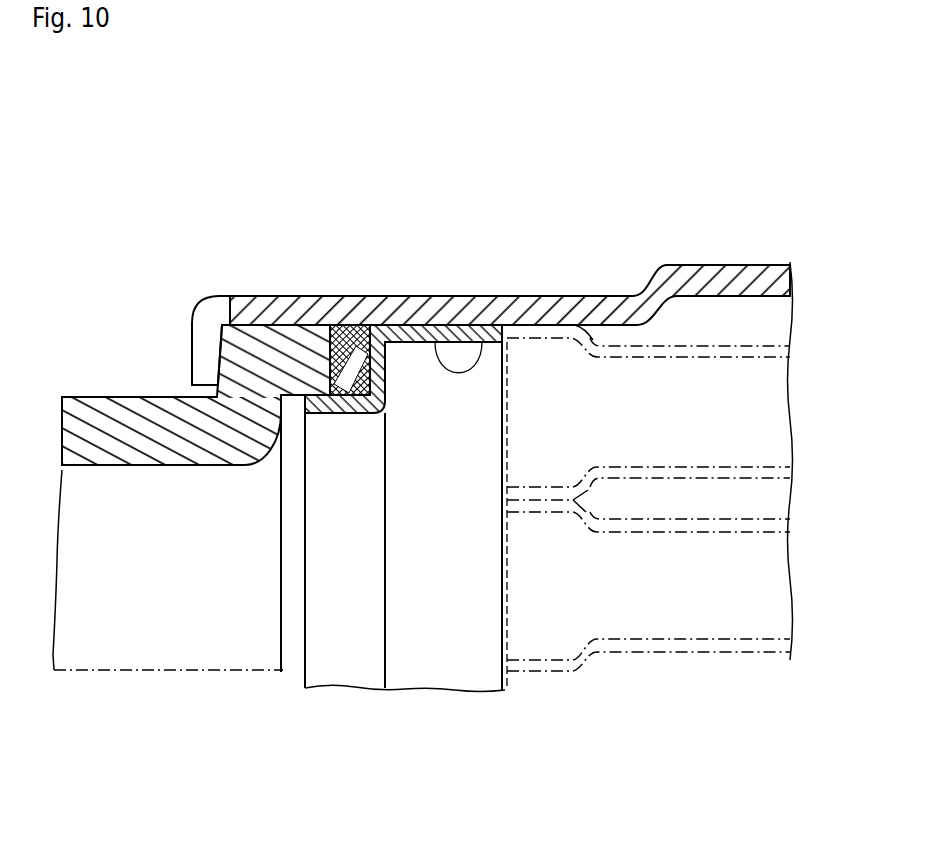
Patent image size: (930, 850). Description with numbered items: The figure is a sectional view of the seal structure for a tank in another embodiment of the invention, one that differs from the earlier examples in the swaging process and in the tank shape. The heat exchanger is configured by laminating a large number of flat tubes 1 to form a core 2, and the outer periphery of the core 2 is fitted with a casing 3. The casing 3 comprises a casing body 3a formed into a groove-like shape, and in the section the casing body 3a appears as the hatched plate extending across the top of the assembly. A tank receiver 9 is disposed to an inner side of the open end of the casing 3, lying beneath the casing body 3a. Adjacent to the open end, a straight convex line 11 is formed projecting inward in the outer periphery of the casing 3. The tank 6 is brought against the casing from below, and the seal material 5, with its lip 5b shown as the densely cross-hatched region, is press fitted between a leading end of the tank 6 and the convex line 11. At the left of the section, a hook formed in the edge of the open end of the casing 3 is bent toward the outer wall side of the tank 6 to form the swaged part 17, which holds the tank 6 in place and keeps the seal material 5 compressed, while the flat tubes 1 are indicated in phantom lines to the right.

The flat tube 1 is at (562, 672).
The core 2 is at (507, 583).
The casing 3 is at (511, 412).
The casing body 3a is at (718, 265).
The seal material 5 is at (318, 306).
The seal material lip 5b is at (297, 325).
The tank 6 is at (100, 396).
The tank receiver 9 is at (490, 325).
The convex line 11 is at (352, 304).
The swaged part 17 is at (192, 356).